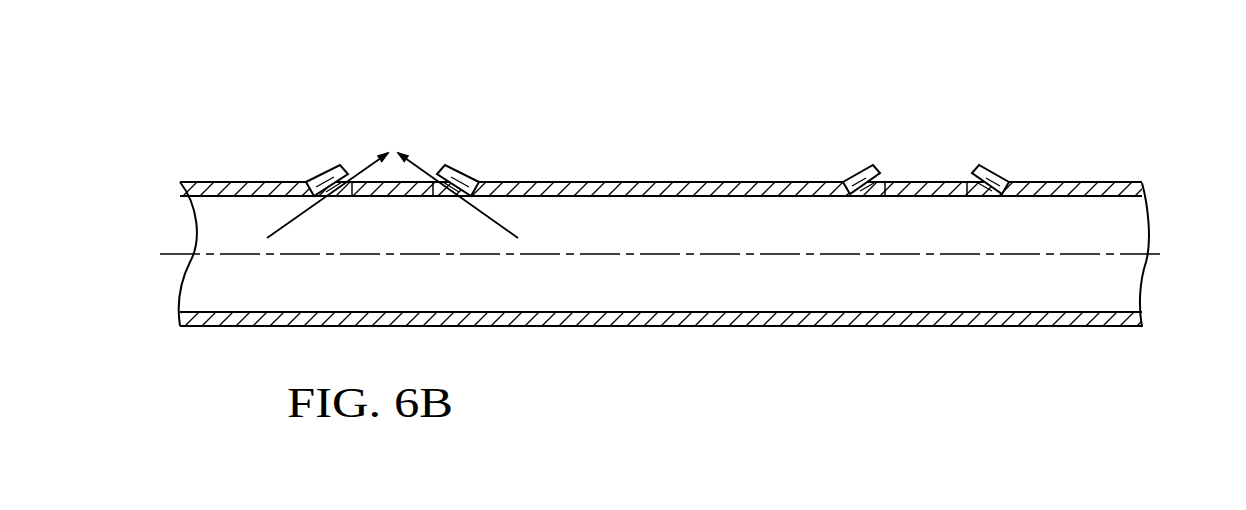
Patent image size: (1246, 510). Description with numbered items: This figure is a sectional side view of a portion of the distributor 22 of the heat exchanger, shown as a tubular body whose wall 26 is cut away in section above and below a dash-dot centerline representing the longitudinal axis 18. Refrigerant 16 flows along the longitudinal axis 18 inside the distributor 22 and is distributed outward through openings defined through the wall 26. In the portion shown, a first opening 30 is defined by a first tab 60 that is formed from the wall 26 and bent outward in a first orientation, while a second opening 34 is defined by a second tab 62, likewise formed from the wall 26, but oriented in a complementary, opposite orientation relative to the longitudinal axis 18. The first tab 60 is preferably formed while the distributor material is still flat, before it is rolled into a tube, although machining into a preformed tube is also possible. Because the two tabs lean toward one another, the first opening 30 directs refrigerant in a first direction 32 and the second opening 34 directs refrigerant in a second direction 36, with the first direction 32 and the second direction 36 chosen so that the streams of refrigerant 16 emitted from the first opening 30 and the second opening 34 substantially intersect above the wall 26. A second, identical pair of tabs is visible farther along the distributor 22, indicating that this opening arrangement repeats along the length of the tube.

The distributor 22 is at (694, 200).
The wall 26 is at (1117, 182).
The longitudinal axis 18 is at (1158, 255).
The refrigerant 16 is at (390, 132).
The first opening 30 is at (350, 155).
The second opening 34 is at (437, 155).
The first tab 60 is at (318, 177).
The second tab 62 is at (453, 173).
The first direction 32 is at (288, 225).
The second direction 36 is at (496, 225).